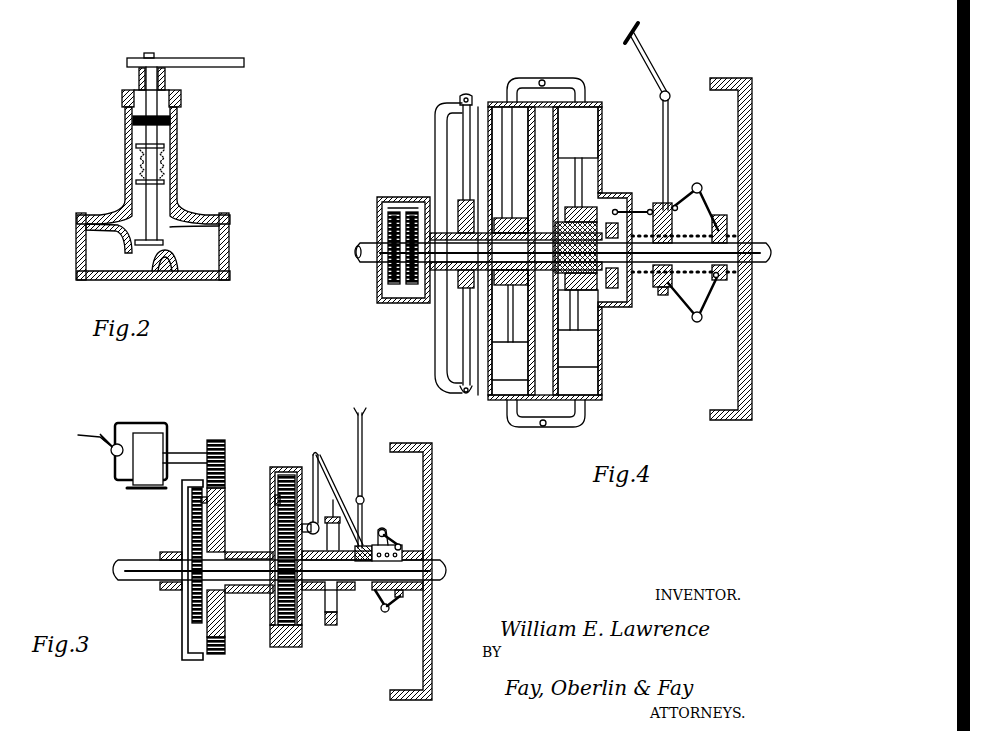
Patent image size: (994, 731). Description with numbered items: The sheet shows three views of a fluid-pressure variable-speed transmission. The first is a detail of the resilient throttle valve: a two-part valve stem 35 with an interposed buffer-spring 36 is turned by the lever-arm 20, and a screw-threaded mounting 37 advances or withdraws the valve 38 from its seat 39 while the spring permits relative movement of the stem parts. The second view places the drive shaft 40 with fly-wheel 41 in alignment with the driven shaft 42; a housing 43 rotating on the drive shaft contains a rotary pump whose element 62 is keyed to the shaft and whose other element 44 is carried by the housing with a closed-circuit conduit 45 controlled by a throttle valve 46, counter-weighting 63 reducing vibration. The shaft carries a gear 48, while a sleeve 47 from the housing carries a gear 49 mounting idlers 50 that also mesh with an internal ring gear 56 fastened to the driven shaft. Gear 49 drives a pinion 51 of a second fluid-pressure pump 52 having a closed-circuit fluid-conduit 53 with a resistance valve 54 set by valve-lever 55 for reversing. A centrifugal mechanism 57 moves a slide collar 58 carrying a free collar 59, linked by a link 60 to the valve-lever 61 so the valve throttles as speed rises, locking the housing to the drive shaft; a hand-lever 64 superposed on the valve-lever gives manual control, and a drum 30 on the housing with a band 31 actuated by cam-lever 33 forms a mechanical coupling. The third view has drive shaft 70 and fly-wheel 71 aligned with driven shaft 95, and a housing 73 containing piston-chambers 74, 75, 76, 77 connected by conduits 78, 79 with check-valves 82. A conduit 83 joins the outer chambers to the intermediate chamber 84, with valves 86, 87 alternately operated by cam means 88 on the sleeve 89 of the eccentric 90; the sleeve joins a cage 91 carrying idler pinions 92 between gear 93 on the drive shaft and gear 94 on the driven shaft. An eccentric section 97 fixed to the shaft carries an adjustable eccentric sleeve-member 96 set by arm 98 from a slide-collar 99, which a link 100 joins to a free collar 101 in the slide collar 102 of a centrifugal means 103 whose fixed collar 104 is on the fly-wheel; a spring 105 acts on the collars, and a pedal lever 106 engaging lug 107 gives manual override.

In FIG. 2, the lever-arm 20 is at (200, 62).
In FIG. 2, the two-part valve stem 35 is at (158, 195).
In FIG. 2, the buffer-spring 36 is at (138, 165).
In FIG. 2, the screw-threaded mounting 37 is at (172, 121).
In FIG. 2, the valve 38 is at (160, 240).
In FIG. 2, the valve seat 39 is at (160, 272).
In FIG. 3, the drum 30 is at (325, 604).
In FIG. 3, the band 31 is at (330, 625).
In FIG. 3, the cam-lever 33 is at (362, 495).
In FIG. 3, the drive shaft 40 is at (440, 578).
In FIG. 3, the fly-wheel 41 is at (433, 490).
In FIG. 3, the driven shaft 42 is at (150, 575).
In FIG. 3, the housing 43 is at (268, 628).
In FIG. 3, the pump element 44 is at (287, 480).
In FIG. 3, the conduit 45 is at (311, 536).
In FIG. 3, the throttle or resistance-valve 46 is at (314, 455).
In FIG. 3, the sleeve 47 is at (248, 593).
In FIG. 3, the gear 48 is at (185, 636).
In FIG. 3, the gear 49 is at (226, 545).
In FIG. 3, the idlers 50 is at (190, 512).
In FIG. 3, the pinion 51 is at (216, 440).
In FIG. 3, the fluid-pressure pump 52 is at (150, 445).
In FIG. 3, the closed-circuit fluid-conduit 53 is at (127, 423).
In FIG. 3, the throttle or resistance-valve 54 is at (112, 455).
In FIG. 3, the valve-lever 55 is at (81, 436).
In FIG. 3, the internal ring gear 56 is at (192, 660).
In FIG. 3, the centrifugal or fly-ball mechanism 57 is at (386, 612).
In FIG. 3, the slide collar 58 is at (365, 598).
In FIG. 3, the free collar 59 is at (375, 535).
In FIG. 3, the link 60 is at (330, 500).
In FIG. 3, the valve-lever 61 is at (318, 470).
In FIG. 3, the pump element 62 is at (305, 625).
In FIG. 3, the counter-weighting 63 is at (280, 648).
In FIG. 3, the hand-lever 64 is at (364, 428).
In FIG. 4, the drive shaft 70 is at (760, 243).
In FIG. 4, the fly-wheel 71 is at (753, 168).
In FIG. 4, the housing 73 is at (606, 306).
In FIG. 4, the piston-chamber 74 is at (578, 132).
In FIG. 4, the piston-chamber 75 is at (578, 342).
In FIG. 4, the piston-chamber 76 is at (510, 170).
In FIG. 4, the piston-chamber 77 is at (510, 332).
In FIG. 4, the conduit 78 is at (518, 80).
In FIG. 4, the conduit 79 is at (512, 420).
In FIG. 4, the check-valves 82 is at (546, 80).
In FIG. 4, the conduit 83 is at (434, 133).
In FIG. 4, the intermediate chamber 84 is at (569, 310).
In FIG. 4, the valve 86 is at (468, 95).
In FIG. 4, the valve 87 is at (464, 396).
In FIG. 4, the cam or eccentric means 88 is at (472, 200).
In FIG. 4, the sleeve 89 is at (440, 275).
In FIG. 4, the cam or eccentric 90 is at (500, 288).
In FIG. 4, the cage 91 is at (390, 198).
In FIG. 4, the idler pinions 92 is at (404, 208).
In FIG. 4, the gear 93 is at (410, 286).
In FIG. 4, the gear 94 is at (392, 286).
In FIG. 4, the driven shaft 95 is at (357, 256).
In FIG. 4, the eccentric sleeve-member 96 is at (562, 236).
In FIG. 4, the eccentric section 97 is at (566, 281).
In FIG. 4, the arm 98 is at (604, 230).
In FIG. 4, the slide-collar 99 is at (620, 285).
In FIG. 4, the link 100 is at (640, 210).
In FIG. 4, the free collar 101 is at (665, 203).
In FIG. 4, the slide collar 102 is at (666, 296).
In FIG. 4, the centrifugal or flyball means 103 is at (698, 322).
In FIG. 4, the fixed collar 104 is at (722, 215).
In FIG. 4, the spring 105 is at (686, 243).
In FIG. 4, the pedal lever 106 is at (648, 40).
In FIG. 4, the lug 107 is at (660, 200).